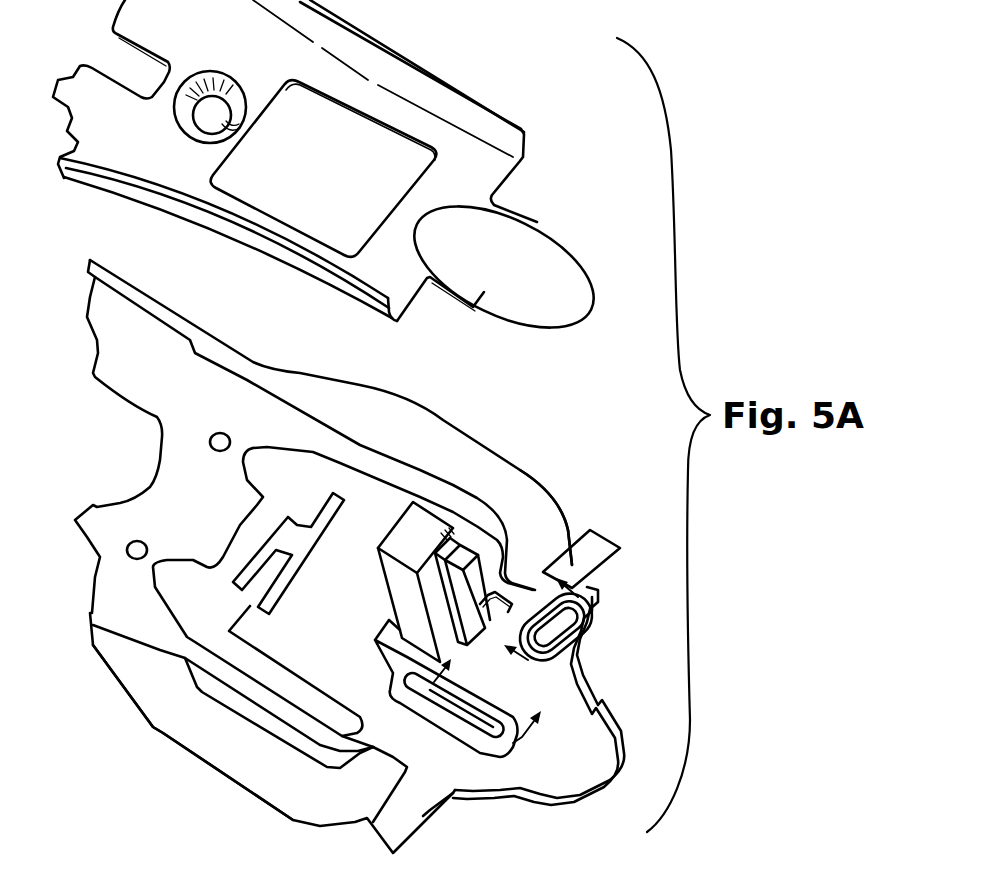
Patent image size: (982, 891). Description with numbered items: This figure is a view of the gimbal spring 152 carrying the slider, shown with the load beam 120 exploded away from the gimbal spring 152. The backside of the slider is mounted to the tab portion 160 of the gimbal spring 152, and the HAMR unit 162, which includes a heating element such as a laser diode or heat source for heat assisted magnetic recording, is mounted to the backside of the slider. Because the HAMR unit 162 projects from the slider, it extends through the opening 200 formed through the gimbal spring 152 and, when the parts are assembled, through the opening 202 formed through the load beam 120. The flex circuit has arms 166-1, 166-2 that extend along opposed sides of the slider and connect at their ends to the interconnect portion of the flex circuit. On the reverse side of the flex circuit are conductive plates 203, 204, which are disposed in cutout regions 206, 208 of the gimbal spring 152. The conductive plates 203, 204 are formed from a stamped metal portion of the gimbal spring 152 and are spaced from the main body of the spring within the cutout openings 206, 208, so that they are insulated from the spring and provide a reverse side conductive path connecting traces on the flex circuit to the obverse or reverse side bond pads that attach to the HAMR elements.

The load beam 120 is at (445, 112).
The opening 202 is at (440, 146).
The gimbal spring 152 is at (369, 556).
The tab portion 160 is at (334, 632).
The HAMR unit 162 is at (428, 528).
The arm 166-1 is at (555, 492).
The arm 166-2 is at (250, 762).
The opening 200 is at (458, 658).
The conductive plate 203 is at (483, 735).
The conductive plate 204 is at (567, 625).
The cutout region 206 is at (452, 728).
The cutout region 208 is at (573, 640).